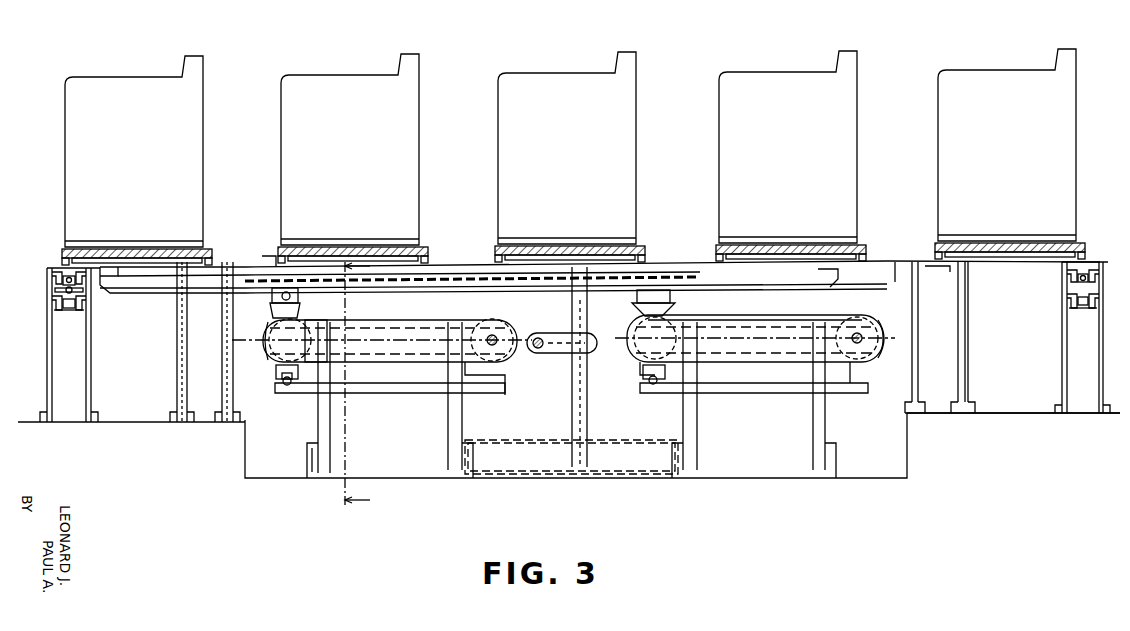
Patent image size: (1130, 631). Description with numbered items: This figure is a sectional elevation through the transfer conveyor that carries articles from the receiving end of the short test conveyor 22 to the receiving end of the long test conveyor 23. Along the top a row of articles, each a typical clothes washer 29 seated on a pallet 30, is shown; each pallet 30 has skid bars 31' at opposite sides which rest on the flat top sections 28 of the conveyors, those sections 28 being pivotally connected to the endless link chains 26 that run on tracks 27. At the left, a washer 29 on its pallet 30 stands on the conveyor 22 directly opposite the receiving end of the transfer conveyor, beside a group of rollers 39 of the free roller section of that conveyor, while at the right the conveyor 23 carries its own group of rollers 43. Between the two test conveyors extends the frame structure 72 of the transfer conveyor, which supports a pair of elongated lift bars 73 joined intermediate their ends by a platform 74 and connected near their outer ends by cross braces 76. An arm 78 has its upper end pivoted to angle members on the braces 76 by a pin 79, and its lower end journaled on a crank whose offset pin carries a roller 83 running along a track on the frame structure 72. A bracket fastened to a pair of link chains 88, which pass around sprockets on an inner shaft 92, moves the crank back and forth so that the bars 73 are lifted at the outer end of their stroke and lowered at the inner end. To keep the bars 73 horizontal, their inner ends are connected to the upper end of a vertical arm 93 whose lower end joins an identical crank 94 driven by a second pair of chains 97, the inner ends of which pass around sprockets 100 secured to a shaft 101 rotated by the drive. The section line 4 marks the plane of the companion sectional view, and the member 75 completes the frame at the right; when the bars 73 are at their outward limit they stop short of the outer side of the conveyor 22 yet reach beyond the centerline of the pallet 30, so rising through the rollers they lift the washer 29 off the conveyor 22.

The section line 4- 4 is at (366, 387).
The short test conveyor 22 is at (182, 370).
The long test conveyor 23 is at (1062, 370).
The endless link type chains 26 is at (74, 292).
The tracks 27 is at (50, 290).
The flat top sections 28 is at (55, 268).
The clothes washer 29 is at (127, 90).
The pallet 30 is at (138, 250).
The skid bars 31' is at (585, 234).
The group of rollers 39 is at (272, 256).
The group of rollers 43 is at (948, 270).
The frame structure 72 is at (332, 452).
The lift bars 73 is at (168, 284).
The platform 74 is at (448, 266).
The end bar 75 is at (896, 264).
The cross braces 76 is at (272, 298).
The arm 78 is at (300, 312).
The pin 79 is at (292, 306).
The roller 83 is at (288, 386).
The link chains 88 is at (412, 318).
The shaft 92 is at (497, 336).
The vertical arm 93 is at (672, 310).
The crank 94 is at (651, 384).
The chains 97 is at (758, 316).
The sprockets 100 is at (883, 345).
The shaft 101 is at (862, 333).